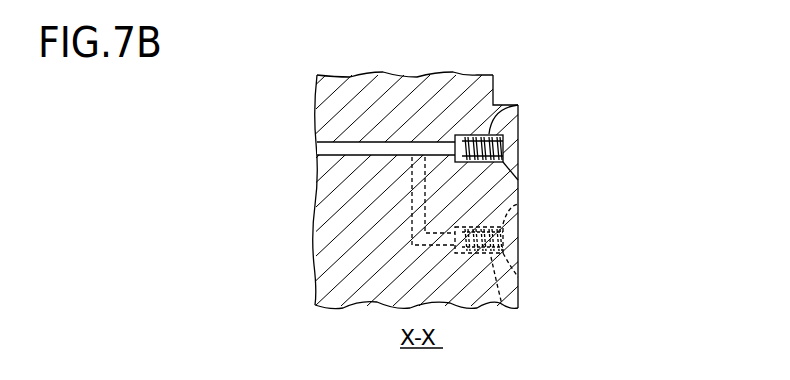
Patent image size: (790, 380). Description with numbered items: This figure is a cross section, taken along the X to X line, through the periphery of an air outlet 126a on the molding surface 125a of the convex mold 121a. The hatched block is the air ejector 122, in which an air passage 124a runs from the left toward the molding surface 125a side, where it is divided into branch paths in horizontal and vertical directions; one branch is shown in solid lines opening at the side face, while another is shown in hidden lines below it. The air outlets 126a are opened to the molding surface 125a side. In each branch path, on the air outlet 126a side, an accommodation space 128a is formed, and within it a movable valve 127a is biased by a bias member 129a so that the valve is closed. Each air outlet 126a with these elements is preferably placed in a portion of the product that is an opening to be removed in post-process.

The convex mold 121a is at (470, 74).
The air ejector 122 is at (530, 125).
The air passage 124a is at (322, 151).
The molding surface 125a is at (520, 195).
The air outlet 126a is at (493, 160).
The movable valve 127a is at (512, 150).
The accommodation space 128a is at (465, 134).
The bias member 129a is at (493, 133).